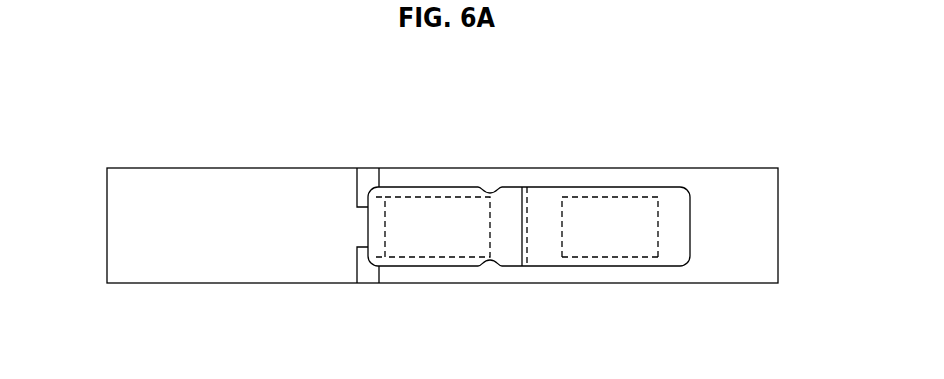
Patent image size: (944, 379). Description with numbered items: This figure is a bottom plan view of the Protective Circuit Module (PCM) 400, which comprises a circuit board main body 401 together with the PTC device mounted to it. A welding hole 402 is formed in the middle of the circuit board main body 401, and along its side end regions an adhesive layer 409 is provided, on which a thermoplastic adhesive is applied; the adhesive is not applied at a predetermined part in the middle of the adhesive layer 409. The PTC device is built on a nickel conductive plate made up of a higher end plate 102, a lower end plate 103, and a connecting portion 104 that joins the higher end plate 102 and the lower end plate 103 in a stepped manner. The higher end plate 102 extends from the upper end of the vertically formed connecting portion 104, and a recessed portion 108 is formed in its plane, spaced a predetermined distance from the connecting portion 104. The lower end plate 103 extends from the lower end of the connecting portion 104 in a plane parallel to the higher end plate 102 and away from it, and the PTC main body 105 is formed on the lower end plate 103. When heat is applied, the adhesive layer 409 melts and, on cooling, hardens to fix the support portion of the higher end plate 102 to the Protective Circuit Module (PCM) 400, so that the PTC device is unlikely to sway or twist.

The Protective Circuit Module (PCM) 400 is at (82, 71).
The circuit board main body 401 is at (770, 227).
The adhesive layer 409 is at (368, 180).
The welding hole 402 is at (411, 205).
The recessed portion 108 is at (489, 186).
The connecting portion 104 is at (525, 192).
The PTC main body 105 is at (606, 205).
The higher end plate 102 is at (422, 262).
The lower end plate 103 is at (593, 262).